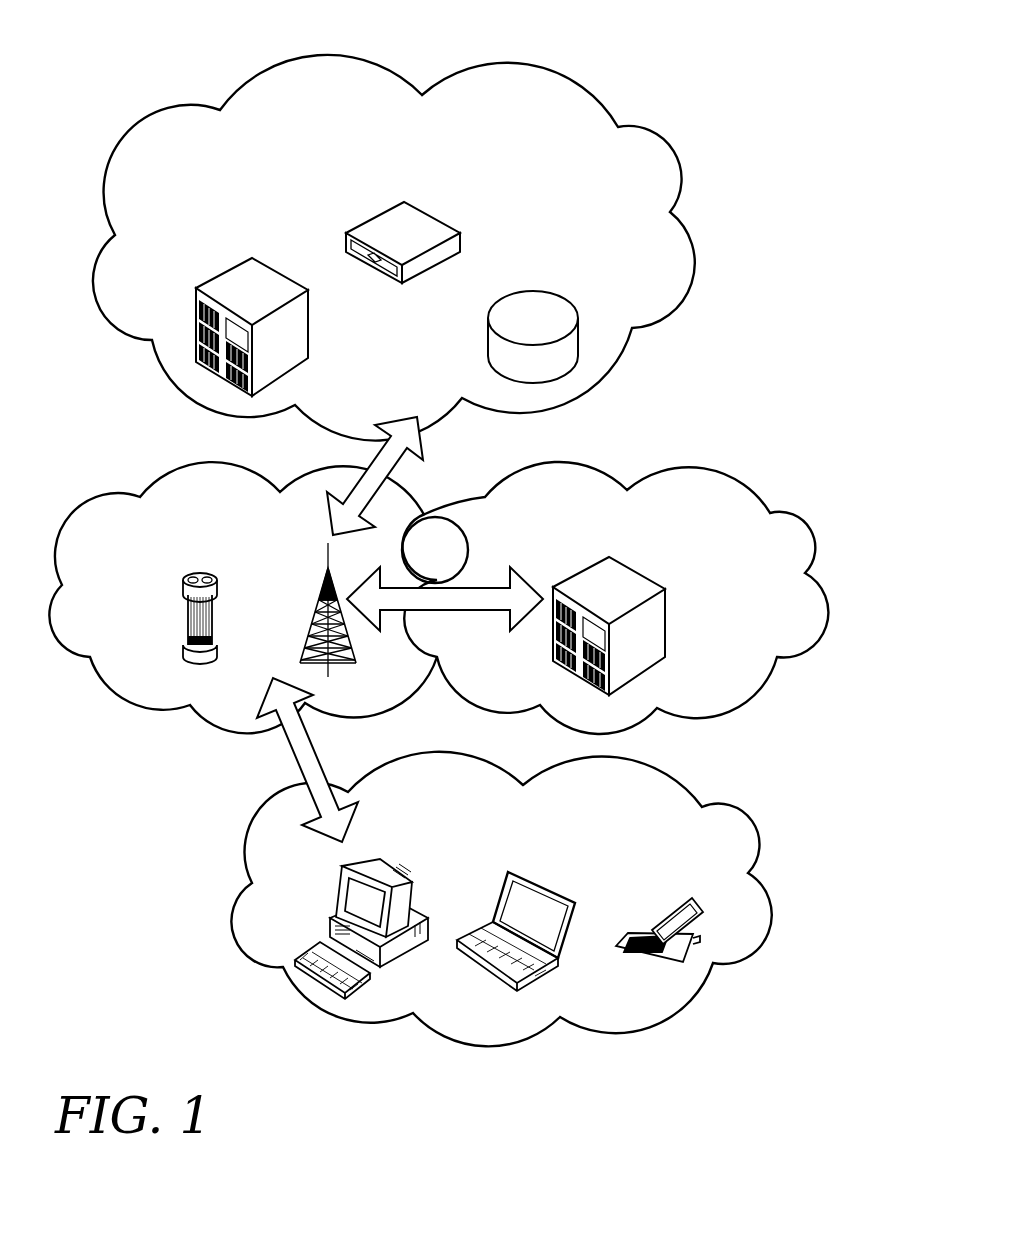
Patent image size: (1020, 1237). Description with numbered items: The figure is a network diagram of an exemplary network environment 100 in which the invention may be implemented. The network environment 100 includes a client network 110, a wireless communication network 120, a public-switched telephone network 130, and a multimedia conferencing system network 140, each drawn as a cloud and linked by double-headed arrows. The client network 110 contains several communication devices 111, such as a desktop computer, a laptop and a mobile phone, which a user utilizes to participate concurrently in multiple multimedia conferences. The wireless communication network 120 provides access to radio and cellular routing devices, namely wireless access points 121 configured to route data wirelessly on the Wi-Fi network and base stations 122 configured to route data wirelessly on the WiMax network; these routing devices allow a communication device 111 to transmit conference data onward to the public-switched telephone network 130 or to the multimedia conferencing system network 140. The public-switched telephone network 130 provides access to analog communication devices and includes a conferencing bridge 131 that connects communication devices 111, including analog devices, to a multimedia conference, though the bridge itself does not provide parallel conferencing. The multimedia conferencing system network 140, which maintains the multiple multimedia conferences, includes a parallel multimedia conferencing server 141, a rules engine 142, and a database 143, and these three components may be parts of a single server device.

The network environment 100 is at (438, 525).
The client network 110 is at (501, 899).
The communication device 111 is at (343, 891).
The wireless communication network 120 is at (244, 597).
The wireless access point 121 is at (185, 618).
The base station 122 is at (320, 597).
The public-switched telephone network 130 is at (615, 598).
The conferencing bridge 131 is at (663, 632).
The multimedia conferencing system network 140 is at (394, 248).
The parallel multimedia conferencing server 141 is at (308, 318).
The rules engine 142 is at (460, 238).
The database 143 is at (578, 316).